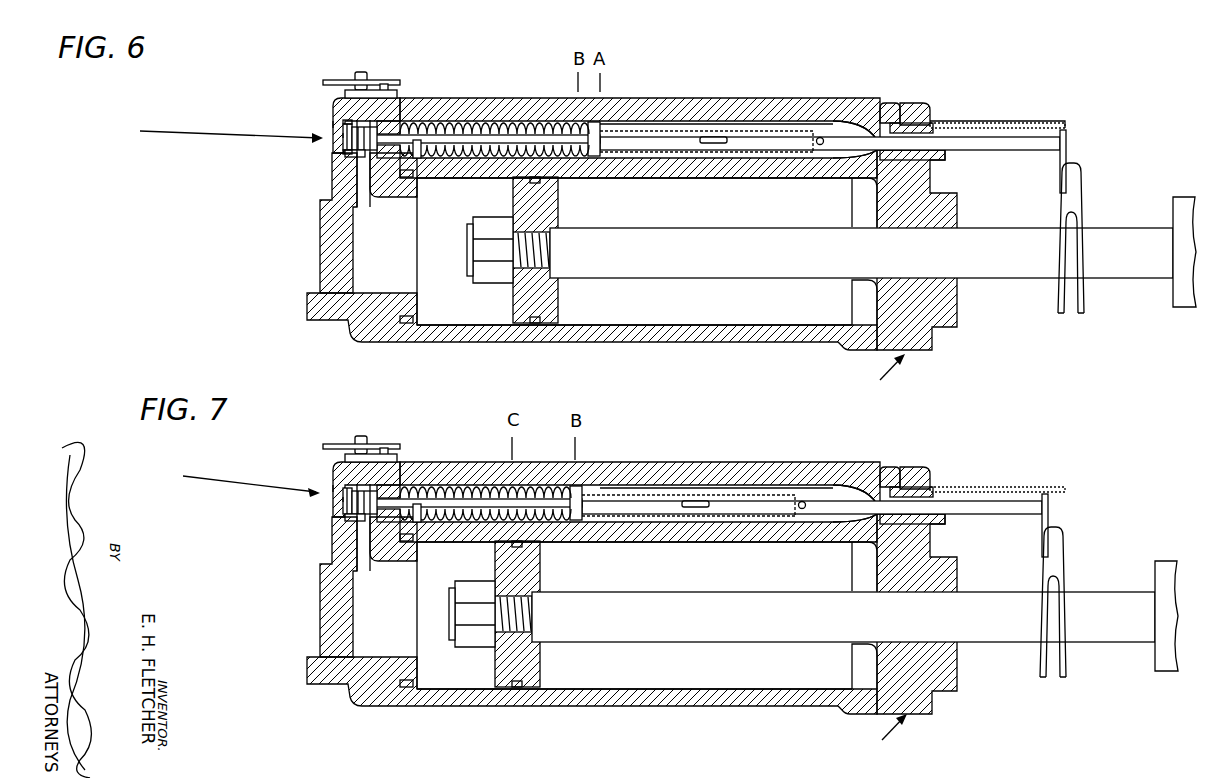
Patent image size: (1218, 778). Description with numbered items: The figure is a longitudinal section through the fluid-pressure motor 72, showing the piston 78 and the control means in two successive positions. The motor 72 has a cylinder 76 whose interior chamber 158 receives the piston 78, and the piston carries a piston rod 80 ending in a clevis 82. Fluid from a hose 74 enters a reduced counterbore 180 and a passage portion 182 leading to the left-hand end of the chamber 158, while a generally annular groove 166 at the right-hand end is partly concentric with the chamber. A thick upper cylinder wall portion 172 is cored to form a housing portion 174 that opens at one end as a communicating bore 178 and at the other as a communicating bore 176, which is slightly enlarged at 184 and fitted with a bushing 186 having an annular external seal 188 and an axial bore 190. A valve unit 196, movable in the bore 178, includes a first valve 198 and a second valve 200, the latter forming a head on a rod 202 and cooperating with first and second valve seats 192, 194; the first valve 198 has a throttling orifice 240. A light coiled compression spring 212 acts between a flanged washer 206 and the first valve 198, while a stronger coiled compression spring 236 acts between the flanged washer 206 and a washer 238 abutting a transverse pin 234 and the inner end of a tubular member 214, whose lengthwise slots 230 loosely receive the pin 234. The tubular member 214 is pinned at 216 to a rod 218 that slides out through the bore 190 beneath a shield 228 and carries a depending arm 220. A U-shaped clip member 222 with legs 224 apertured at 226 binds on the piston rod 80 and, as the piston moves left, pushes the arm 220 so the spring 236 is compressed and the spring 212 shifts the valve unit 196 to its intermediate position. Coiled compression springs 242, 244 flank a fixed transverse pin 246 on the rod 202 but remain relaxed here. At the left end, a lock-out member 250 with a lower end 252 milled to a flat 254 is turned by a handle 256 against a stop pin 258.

In FIG. 6, the fluid-pressure motor 72 is at (881, 374).
In FIG. 7, the fluid-pressure motor 72 is at (882, 733).
In FIG. 6, the hose 74 is at (231, 127).
In FIG. 7, the hose 74 is at (251, 475).
In FIG. 6, the cylinder 76 is at (747, 335).
In FIG. 7, the cylinder 76 is at (750, 700).
In FIG. 6, the piston 78 is at (548, 305).
In FIG. 7, the piston 78 is at (537, 662).
In FIG. 6, the piston rod 80 is at (1145, 210).
In FIG. 7, the piston rod 80 is at (1118, 596).
In FIG. 6, the clevis 82 is at (1185, 210).
In FIG. 7, the clevis 82 is at (1175, 574).
In FIG. 6, the cylinder chamber 158 is at (697, 211).
In FIG. 7, the cylinder chamber 158 is at (654, 576).
In FIG. 6, the annular groove 166 is at (860, 193).
In FIG. 7, the annular groove 166 is at (858, 560).
In FIG. 6, the upper cylinder wall portion 172 is at (725, 170).
In FIG. 7, the upper cylinder wall portion 172 is at (730, 534).
In FIG. 6, the housing portion 174 is at (790, 125).
In FIG. 7, the housing portion 174 is at (768, 490).
In FIG. 6, the communicating bore 176 is at (872, 123).
In FIG. 7, the communicating bore 176 is at (870, 488).
In FIG. 6, the communicating bore 178 is at (372, 120).
In FIG. 7, the communicating bore 178 is at (375, 485).
In FIG. 6, the reduced counterbore 180 is at (343, 140).
In FIG. 7, the reduced counterbore 180 is at (343, 503).
In FIG. 6, the passage portion 182 is at (333, 183).
In FIG. 7, the passage portion 182 is at (350, 550).
In FIG. 6, the enlarged bore 184 is at (927, 113).
In FIG. 7, the enlarged bore 184 is at (927, 477).
In FIG. 6, the bushing 186 is at (933, 125).
In FIG. 7, the bushing 186 is at (933, 489).
In FIG. 6, the annular external seal 188 is at (903, 123).
In FIG. 7, the annular external seal 188 is at (903, 487).
In FIG. 6, the axial bore 190 is at (927, 250).
In FIG. 7, the axial bore 190 is at (930, 527).
In FIG. 6, the first valve seat 192 is at (343, 128).
In FIG. 7, the first valve seat 192 is at (343, 492).
In FIG. 6, the second valve seat 194 is at (347, 136).
In FIG. 7, the second valve seat 194 is at (347, 500).
In FIG. 6, the valve unit 196 is at (362, 150).
In FIG. 7, the valve unit 196 is at (362, 514).
In FIG. 6, the first valve 198 is at (395, 105).
In FIG. 7, the first valve 198 is at (331, 478).
In FIG. 6, the second valve 200 is at (350, 153).
In FIG. 7, the second valve 200 is at (352, 510).
In FIG. 6, the rod 202 is at (543, 140).
In FIG. 7, the rod 202 is at (535, 505).
In FIG. 6, the flanged washer 206 is at (450, 100).
In FIG. 7, the flanged washer 206 is at (403, 486).
In FIG. 6, the coiled compression spring 212 is at (390, 121).
In FIG. 7, the coiled compression spring 212 is at (392, 485).
In FIG. 6, the tubular member 214 is at (733, 122).
In FIG. 7, the tubular member 214 is at (740, 484).
In FIG. 6, the pin 216 is at (820, 138).
In FIG. 7, the pin 216 is at (803, 502).
In FIG. 6, the rod 218 is at (1027, 137).
In FIG. 7, the rod 218 is at (1008, 503).
In FIG. 6, the depending arm 220 is at (1067, 148).
In FIG. 7, the depending arm 220 is at (1049, 510).
In FIG. 6, the clip member 222 is at (1081, 187).
In FIG. 7, the clip member 222 is at (1063, 551).
In FIG. 6, the legs 224 is at (1058, 300).
In FIG. 7, the legs 224 is at (1040, 664).
In FIG. 6, the apertures 226 is at (1057, 240).
In FIG. 7, the apertures 226 is at (1039, 604).
In FIG. 6, the shield 228 is at (1048, 123).
In FIG. 6, the lengthwise slots 230 is at (710, 137).
In FIG. 7, the lengthwise slots 230 is at (692, 500).
In FIG. 6, the transverse pin 234 is at (600, 140).
In FIG. 7, the transverse pin 234 is at (590, 505).
In FIG. 6, the coiled compression spring 236 is at (487, 127).
In FIG. 7, the coiled compression spring 236 is at (458, 494).
In FIG. 6, the washer 238 is at (612, 133).
In FIG. 7, the washer 238 is at (585, 497).
In FIG. 6, the throttling orifice 240 is at (352, 153).
In FIG. 7, the throttling orifice 240 is at (350, 520).
In FIG. 6, the coiled compression spring 242 is at (433, 152).
In FIG. 7, the coiled compression spring 242 is at (453, 507).
In FIG. 6, the coiled compression spring 244 is at (497, 155).
In FIG. 7, the coiled compression spring 244 is at (465, 520).
In FIG. 6, the fixed transverse pin 246 is at (473, 157).
In FIG. 7, the fixed transverse pin 246 is at (453, 505).
In FIG. 6, the lock-out member 250 is at (358, 72).
In FIG. 7, the lock-out member 250 is at (362, 436).
In FIG. 6, the lower end 252 is at (348, 143).
In FIG. 6, the flat 254 is at (348, 148).
In FIG. 6, the handle 256 is at (350, 80).
In FIG. 7, the handle 256 is at (368, 444).
In FIG. 6, the stop pin 258 is at (386, 84).
In FIG. 7, the stop pin 258 is at (385, 448).